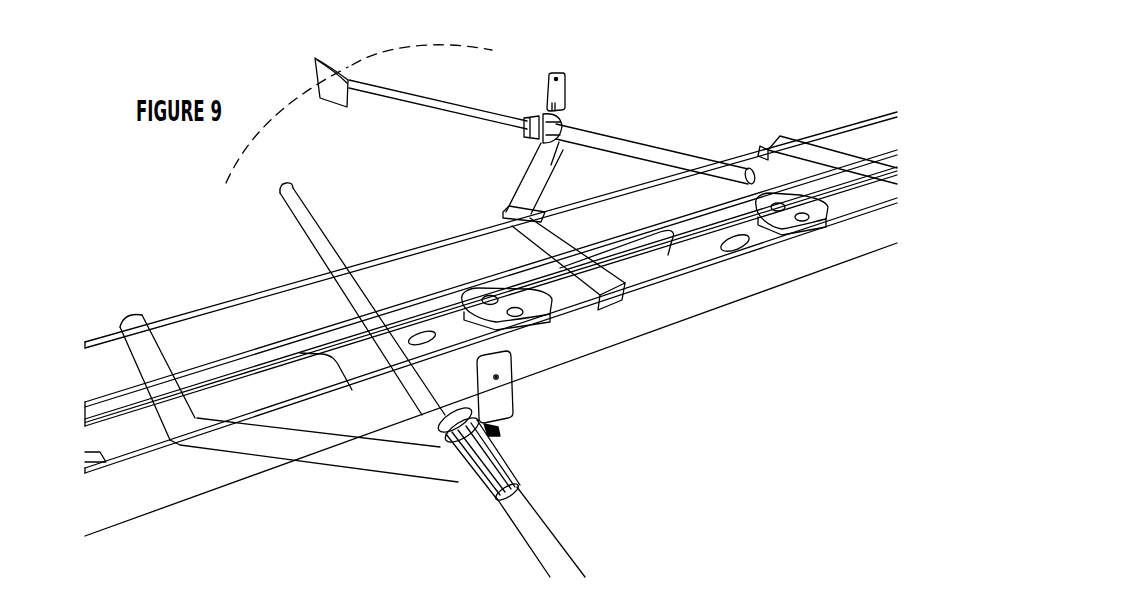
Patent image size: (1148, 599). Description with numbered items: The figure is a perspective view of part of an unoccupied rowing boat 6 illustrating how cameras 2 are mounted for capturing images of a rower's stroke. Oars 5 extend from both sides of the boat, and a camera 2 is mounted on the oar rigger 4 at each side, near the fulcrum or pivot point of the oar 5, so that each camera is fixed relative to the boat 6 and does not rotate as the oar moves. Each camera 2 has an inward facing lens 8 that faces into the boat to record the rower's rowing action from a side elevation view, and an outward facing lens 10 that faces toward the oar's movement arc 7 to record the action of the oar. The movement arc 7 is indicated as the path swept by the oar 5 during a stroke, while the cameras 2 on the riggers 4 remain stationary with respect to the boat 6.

The camera 2 is at (552, 97).
The oar rigger 4 is at (524, 203).
The oar 5 is at (621, 146).
The rowing boat 6 is at (649, 319).
The oar's movement arc 7 is at (433, 45).
The inward facing lens 8 is at (557, 79).
The outward facing lens 10 is at (498, 379).